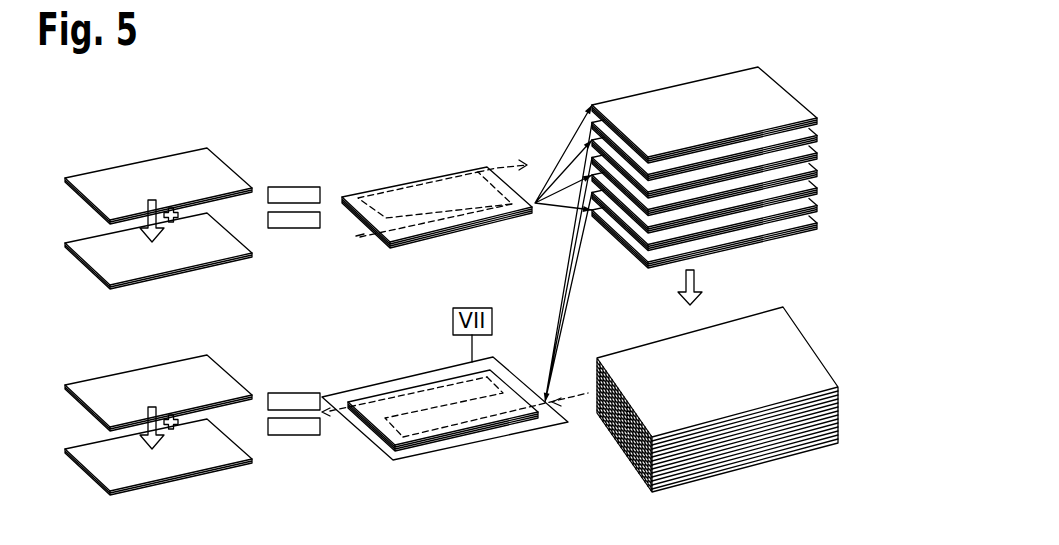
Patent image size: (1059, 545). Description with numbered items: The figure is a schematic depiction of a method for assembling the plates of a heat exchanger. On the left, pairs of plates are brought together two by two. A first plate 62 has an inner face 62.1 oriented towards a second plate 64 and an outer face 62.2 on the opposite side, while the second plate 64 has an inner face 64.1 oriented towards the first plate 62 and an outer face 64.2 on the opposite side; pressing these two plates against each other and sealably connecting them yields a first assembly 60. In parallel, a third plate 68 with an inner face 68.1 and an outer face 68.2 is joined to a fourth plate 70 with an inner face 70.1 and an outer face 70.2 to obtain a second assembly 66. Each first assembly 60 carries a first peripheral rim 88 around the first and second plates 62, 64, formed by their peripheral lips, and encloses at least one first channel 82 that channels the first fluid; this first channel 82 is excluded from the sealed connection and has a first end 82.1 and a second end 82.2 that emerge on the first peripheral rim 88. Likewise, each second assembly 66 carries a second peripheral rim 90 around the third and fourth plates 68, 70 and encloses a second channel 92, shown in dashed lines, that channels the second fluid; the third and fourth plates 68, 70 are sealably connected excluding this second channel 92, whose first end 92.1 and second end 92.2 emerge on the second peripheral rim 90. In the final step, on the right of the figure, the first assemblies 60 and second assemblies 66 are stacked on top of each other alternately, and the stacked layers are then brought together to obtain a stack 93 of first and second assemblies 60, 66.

The first assembly 60 is at (822, 136).
The first plate 62 is at (172, 371).
The inner face 62.1 is at (251, 399).
The outer face 62.2 is at (177, 385).
The second plate 64 is at (144, 468).
The inner face 64.1 is at (85, 455).
The outer face 64.2 is at (238, 470).
The second assembly 66 is at (624, 248).
The third plate 68 is at (175, 149).
The inner face 68.1 is at (251, 191).
The outer face 68.2 is at (101, 190).
The fourth plate 70 is at (147, 264).
The inner face 70.1 is at (85, 247).
The outer face 70.2 is at (238, 262).
The first channel 82 is at (448, 414).
The first end 82.1 is at (578, 402).
The second end 82.2 is at (337, 414).
The first peripheral rim 88 is at (435, 447).
The second peripheral rim 90 is at (467, 234).
The second channel 92 is at (433, 202).
The first end 92.1 is at (360, 240).
The second end 92.2 is at (500, 167).
The stack 93 is at (738, 460).